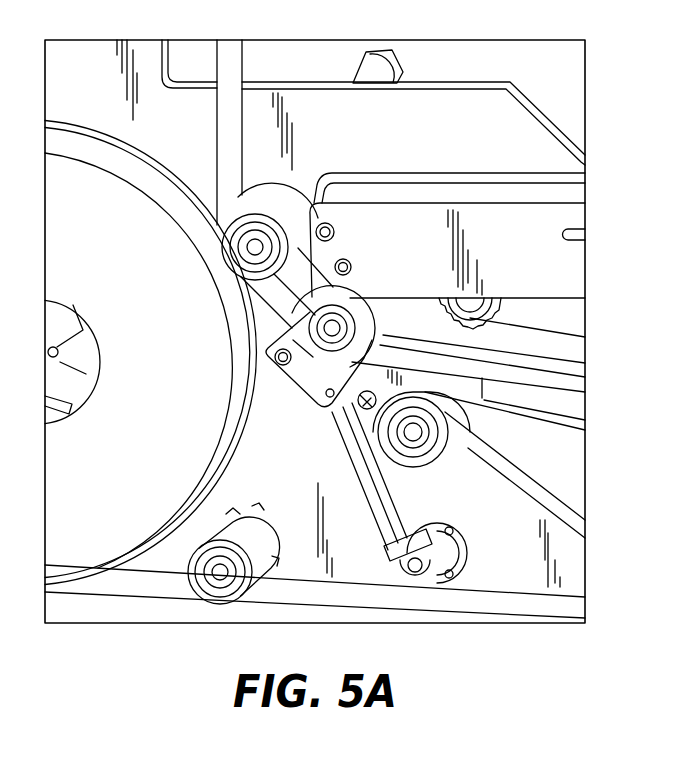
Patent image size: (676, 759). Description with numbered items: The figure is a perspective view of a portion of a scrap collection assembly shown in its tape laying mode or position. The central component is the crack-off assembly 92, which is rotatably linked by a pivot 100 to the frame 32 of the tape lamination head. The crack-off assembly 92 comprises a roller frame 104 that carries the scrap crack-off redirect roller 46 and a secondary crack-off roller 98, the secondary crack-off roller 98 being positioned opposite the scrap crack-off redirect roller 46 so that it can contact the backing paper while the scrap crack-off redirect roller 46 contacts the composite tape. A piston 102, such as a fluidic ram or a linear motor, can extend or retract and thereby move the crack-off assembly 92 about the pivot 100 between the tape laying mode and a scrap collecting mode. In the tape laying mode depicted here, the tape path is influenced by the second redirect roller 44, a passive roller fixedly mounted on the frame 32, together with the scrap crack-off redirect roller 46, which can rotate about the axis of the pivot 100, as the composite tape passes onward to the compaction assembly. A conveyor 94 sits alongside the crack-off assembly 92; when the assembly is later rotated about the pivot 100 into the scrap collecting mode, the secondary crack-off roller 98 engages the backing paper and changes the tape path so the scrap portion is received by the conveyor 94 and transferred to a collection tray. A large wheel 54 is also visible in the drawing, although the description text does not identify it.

The frame 32 is at (482, 148).
The second redirect roller 44 is at (267, 195).
The scrap crack-off redirect roller 46 is at (377, 316).
The wheel 54 is at (166, 407).
The crack-off assembly 92 is at (297, 398).
The conveyor 94 is at (529, 274).
The secondary crack-off roller 98 is at (278, 365).
The pivot 100 is at (318, 372).
The piston 102 is at (455, 512).
The roller frame 104 is at (368, 352).